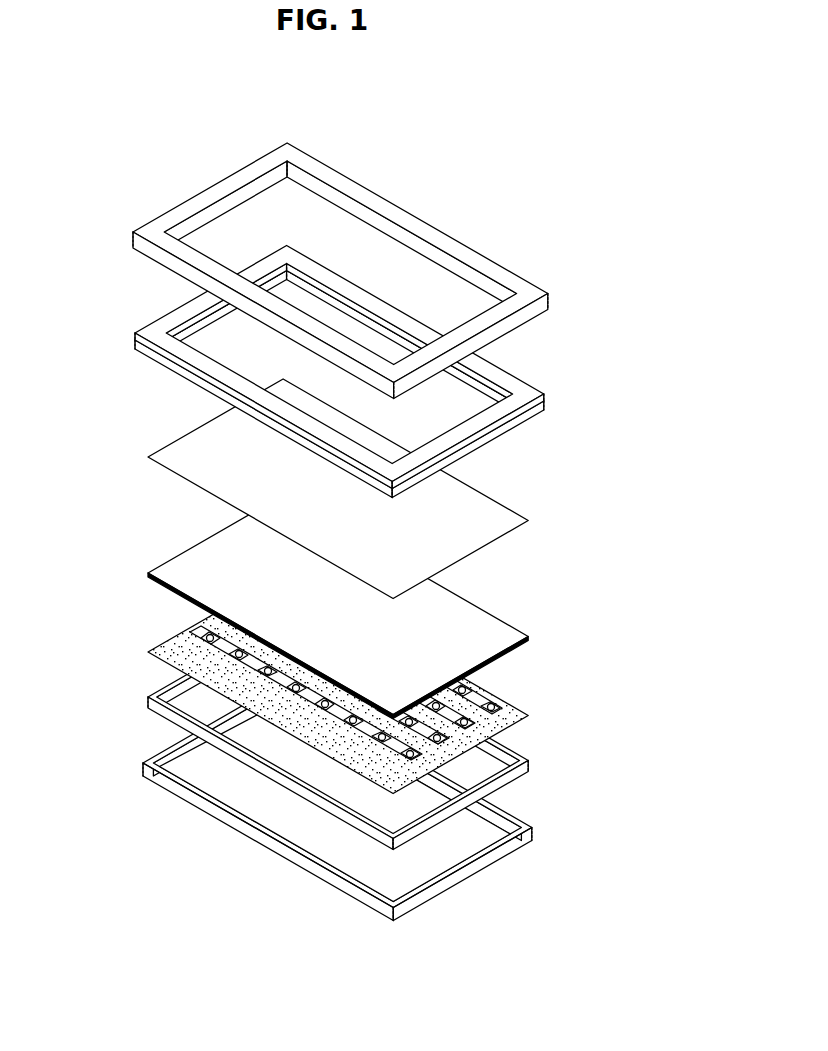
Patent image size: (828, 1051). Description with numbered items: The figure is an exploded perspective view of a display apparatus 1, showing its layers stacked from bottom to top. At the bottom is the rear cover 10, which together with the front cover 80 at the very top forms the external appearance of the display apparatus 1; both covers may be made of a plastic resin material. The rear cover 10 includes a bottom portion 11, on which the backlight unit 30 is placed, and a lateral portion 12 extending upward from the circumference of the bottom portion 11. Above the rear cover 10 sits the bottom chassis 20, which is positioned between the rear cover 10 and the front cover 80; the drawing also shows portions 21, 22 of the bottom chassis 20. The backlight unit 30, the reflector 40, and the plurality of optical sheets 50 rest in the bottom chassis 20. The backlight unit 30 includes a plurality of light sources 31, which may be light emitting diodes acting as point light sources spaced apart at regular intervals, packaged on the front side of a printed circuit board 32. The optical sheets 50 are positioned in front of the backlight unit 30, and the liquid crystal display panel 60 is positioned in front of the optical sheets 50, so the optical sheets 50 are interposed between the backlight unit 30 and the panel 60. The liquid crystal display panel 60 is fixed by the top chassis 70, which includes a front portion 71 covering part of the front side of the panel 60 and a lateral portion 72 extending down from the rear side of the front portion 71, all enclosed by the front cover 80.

The display apparatus 1 is at (499, 118).
The rear cover 10 is at (396, 823).
The bottom portion 11 is at (415, 874).
The lateral portion 12 is at (347, 890).
The bottom chassis 20 is at (388, 756).
The support portion 21 is at (360, 795).
The side portion 22 is at (281, 782).
The backlight unit 30 is at (288, 689).
The light sources 31 is at (202, 693).
The printed circuit board 32 is at (152, 667).
The reflector 40 is at (351, 684).
The optical sheets 50 is at (535, 631).
The liquid crystal display panel 60 is at (533, 517).
The top chassis 70 is at (395, 372).
The front portion 71 is at (523, 374).
The lateral portion 72 is at (541, 418).
The front cover 80 is at (546, 299).